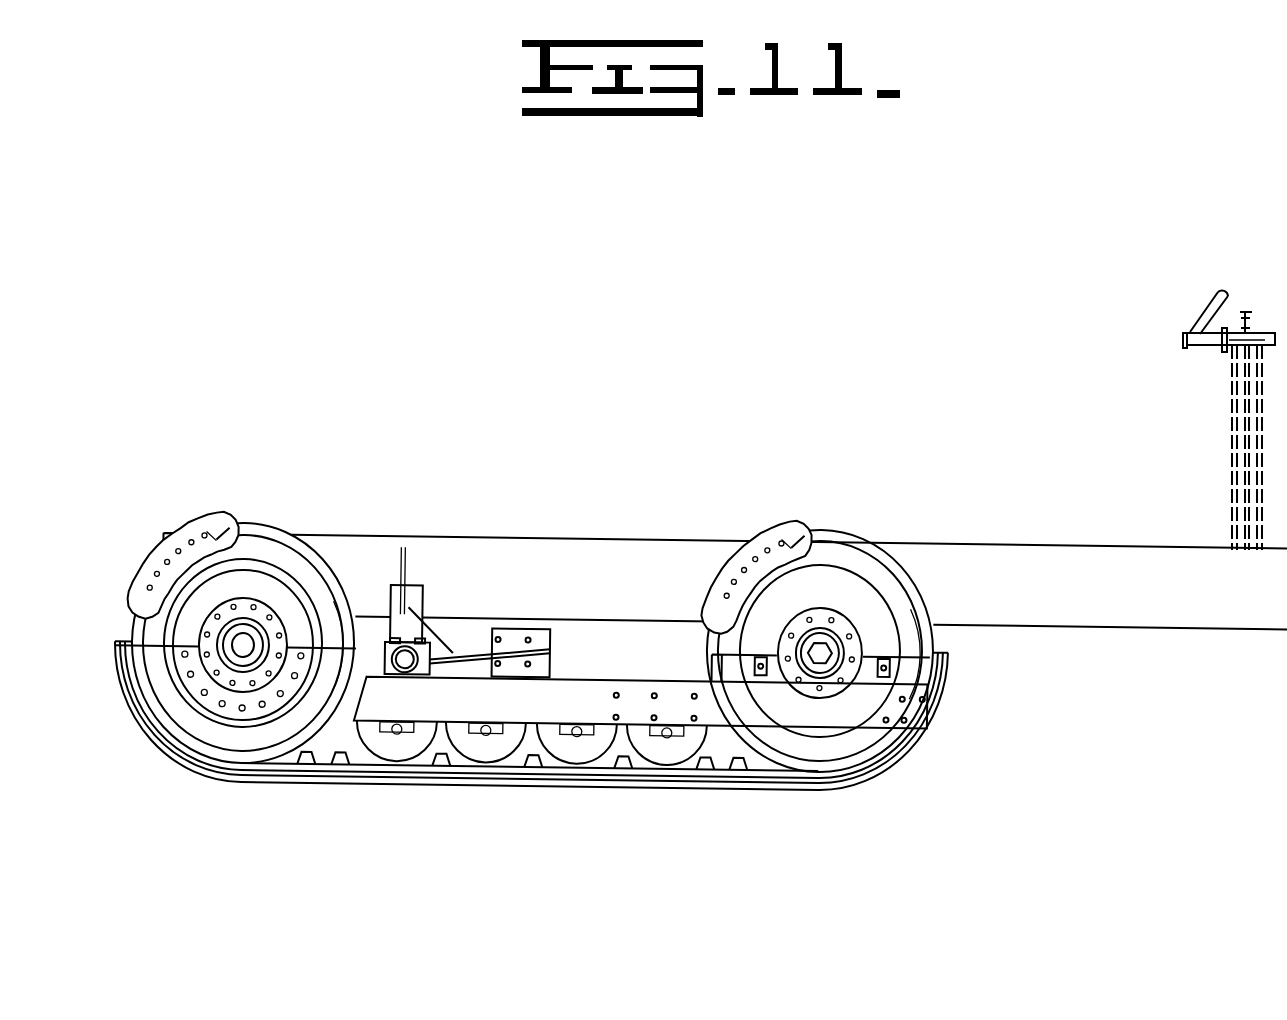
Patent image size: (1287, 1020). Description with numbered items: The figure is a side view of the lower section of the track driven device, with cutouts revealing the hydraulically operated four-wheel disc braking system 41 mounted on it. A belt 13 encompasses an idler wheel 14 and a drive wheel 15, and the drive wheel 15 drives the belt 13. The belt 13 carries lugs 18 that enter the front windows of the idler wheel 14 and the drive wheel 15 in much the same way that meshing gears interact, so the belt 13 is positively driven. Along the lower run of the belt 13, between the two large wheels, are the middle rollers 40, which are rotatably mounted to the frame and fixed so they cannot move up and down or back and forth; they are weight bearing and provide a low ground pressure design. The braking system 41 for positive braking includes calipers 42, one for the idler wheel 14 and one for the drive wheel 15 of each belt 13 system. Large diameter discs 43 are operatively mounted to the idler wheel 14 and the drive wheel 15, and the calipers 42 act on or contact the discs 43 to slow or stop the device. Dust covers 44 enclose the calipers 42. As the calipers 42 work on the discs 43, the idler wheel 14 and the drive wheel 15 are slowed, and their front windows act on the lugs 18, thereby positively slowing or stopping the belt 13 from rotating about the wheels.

The belt 13 is at (198, 764).
The idler wheel 14 is at (852, 748).
The drive wheel 15 is at (192, 713).
The lug 18 is at (337, 762).
The middle roller 40 is at (420, 745).
The braking system 41 is at (172, 516).
The caliper 42 is at (208, 545).
The disc 43 is at (268, 548).
The dust cover 44 is at (143, 608).